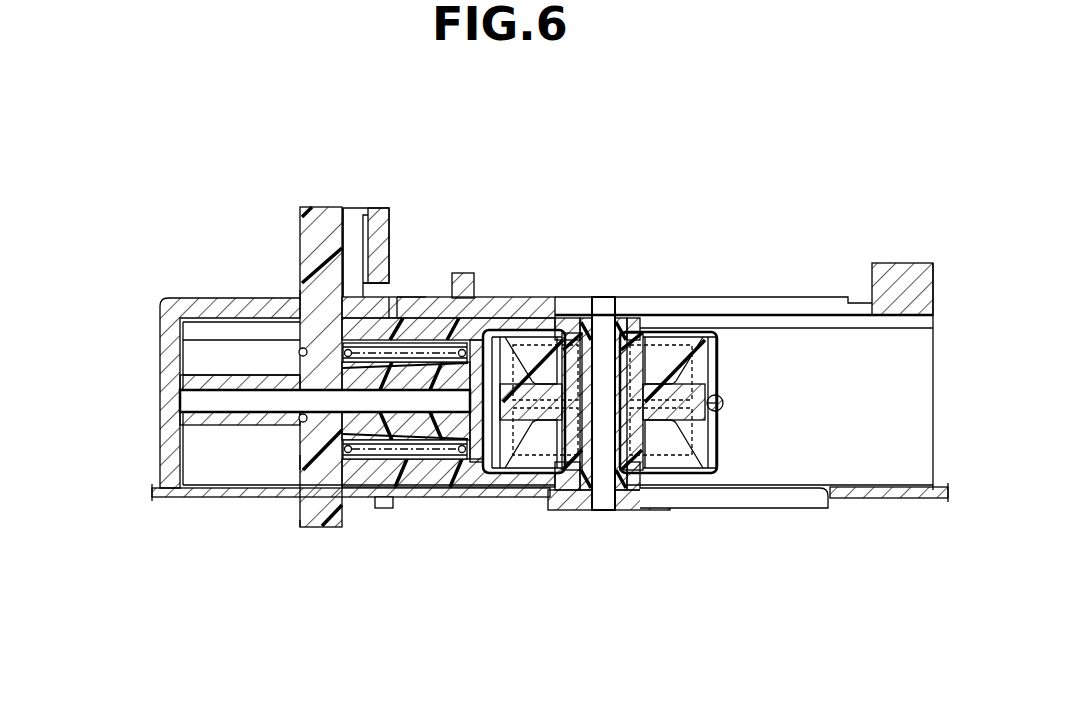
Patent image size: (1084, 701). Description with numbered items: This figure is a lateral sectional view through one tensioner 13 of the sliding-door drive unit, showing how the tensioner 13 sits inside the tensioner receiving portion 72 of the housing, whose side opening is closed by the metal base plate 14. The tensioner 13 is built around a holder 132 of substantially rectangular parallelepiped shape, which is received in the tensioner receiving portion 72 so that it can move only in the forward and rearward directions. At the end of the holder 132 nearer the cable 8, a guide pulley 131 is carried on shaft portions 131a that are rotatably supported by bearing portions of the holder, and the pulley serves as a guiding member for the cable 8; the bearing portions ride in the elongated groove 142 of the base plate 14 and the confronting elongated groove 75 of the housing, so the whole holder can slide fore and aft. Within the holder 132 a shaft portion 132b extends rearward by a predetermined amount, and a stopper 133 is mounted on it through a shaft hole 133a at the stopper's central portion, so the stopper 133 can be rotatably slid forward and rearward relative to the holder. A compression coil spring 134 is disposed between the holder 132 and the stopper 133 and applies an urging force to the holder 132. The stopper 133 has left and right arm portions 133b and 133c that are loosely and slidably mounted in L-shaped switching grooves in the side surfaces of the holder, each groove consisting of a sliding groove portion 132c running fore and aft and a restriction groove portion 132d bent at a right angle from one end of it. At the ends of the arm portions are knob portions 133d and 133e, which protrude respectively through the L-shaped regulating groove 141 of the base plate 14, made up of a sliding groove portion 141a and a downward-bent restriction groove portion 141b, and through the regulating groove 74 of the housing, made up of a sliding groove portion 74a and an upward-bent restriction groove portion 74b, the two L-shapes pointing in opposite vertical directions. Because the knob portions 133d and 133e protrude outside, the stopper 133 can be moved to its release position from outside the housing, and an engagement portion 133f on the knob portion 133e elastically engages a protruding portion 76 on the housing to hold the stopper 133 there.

The cable 8 is at (725, 403).
The tensioner 13 is at (607, 263).
The base plate 14 is at (205, 497).
The tensioner receiving portion 72 is at (212, 297).
The regulating groove 74 is at (436, 272).
The sliding groove portion 74a is at (356, 298).
The restriction groove portion 74b is at (415, 297).
The elongated groove 75 is at (798, 302).
The protruding portion 76 is at (478, 283).
The guide pulley 131 is at (680, 318).
The shaft portion 131a is at (592, 498).
The holder 132 is at (478, 482).
The shaft portion 132b is at (237, 427).
The sliding groove portion 132c is at (198, 333).
The restriction groove portion 132d is at (226, 322).
The stopper 133 is at (299, 243).
The shaft hole 133a is at (298, 462).
The arm portion 133b is at (299, 418).
The arm portion 133c is at (298, 295).
The knob portion 133d is at (301, 527).
The knob portion 133e is at (345, 212).
The engagement portion 133f is at (406, 297).
The compression coil spring 134 is at (457, 505).
The regulating groove 141 is at (405, 510).
The sliding groove portion 141a is at (372, 508).
The restriction groove portion 141b is at (432, 470).
The elongated groove 142 is at (808, 500).